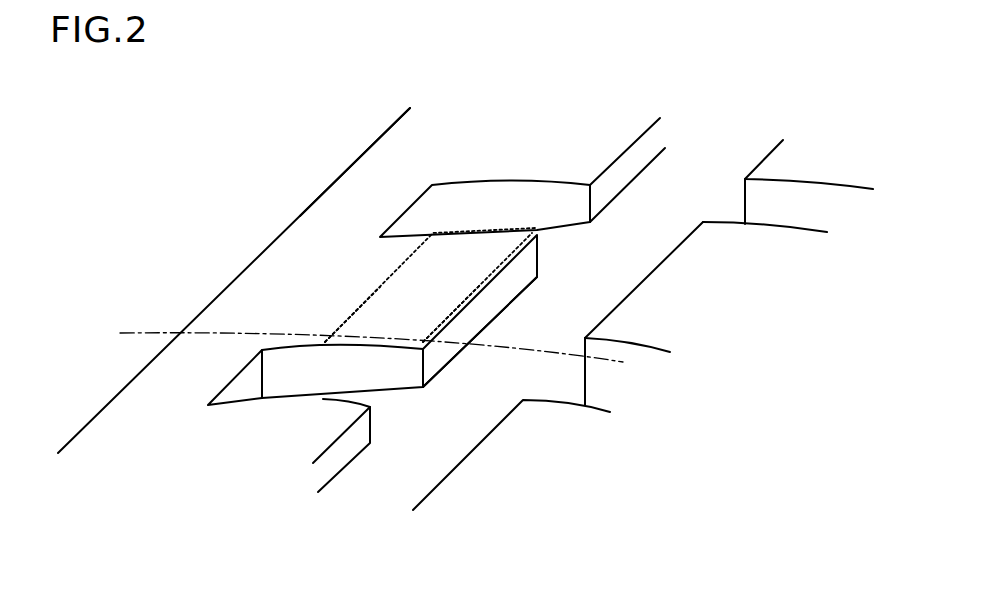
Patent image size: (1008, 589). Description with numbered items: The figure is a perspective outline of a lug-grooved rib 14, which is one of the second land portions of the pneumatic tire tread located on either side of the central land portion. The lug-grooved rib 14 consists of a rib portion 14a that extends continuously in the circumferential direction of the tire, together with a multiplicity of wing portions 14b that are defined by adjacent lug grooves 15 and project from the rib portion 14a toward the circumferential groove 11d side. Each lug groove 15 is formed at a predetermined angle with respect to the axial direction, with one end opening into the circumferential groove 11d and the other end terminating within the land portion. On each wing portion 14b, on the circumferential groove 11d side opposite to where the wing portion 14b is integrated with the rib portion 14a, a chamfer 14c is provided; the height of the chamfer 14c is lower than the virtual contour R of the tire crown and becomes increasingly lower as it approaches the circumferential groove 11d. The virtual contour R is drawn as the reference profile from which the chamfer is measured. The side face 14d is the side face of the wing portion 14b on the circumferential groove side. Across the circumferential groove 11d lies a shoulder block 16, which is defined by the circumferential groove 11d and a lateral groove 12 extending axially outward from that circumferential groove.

The second land portion (lug-grooved rib) 14 is at (218, 264).
The rib portion 14a is at (360, 200).
The wing portion 14b is at (373, 267).
The chamfer 14c is at (430, 272).
The side face of the wing portion 14d is at (493, 300).
The lug groove 15 is at (453, 200).
The circumferential groove 11d is at (665, 202).
The shoulder block 16 is at (750, 250).
The lateral groove 12 is at (622, 390).
The virtual contour of the tire crown R is at (371, 336).